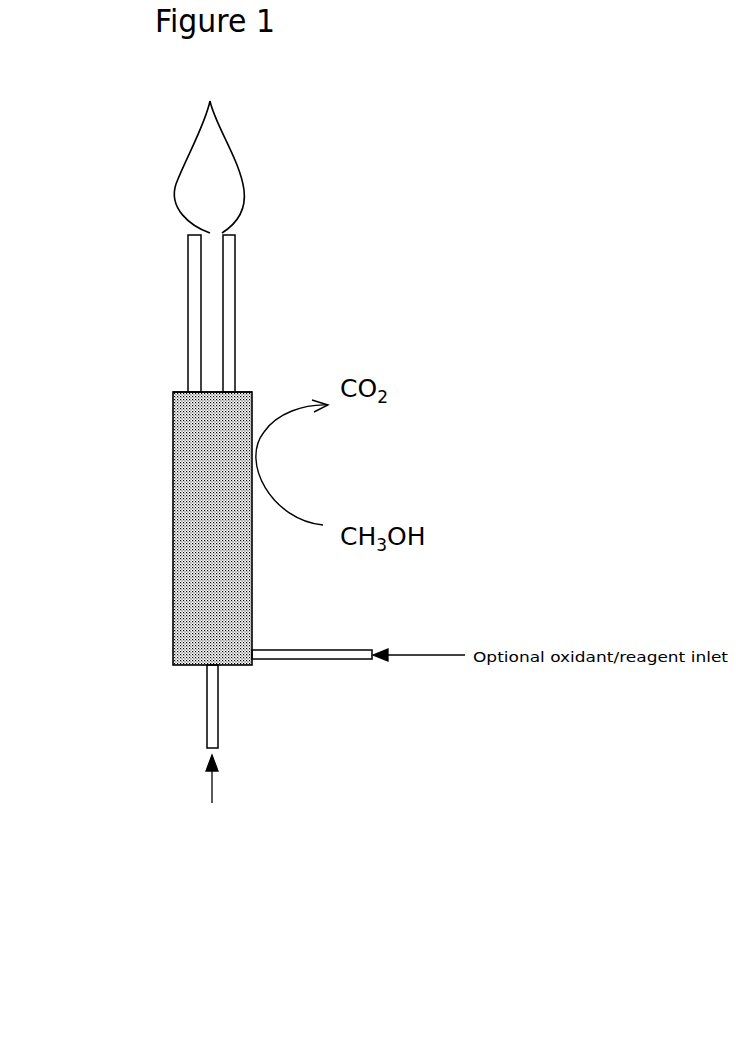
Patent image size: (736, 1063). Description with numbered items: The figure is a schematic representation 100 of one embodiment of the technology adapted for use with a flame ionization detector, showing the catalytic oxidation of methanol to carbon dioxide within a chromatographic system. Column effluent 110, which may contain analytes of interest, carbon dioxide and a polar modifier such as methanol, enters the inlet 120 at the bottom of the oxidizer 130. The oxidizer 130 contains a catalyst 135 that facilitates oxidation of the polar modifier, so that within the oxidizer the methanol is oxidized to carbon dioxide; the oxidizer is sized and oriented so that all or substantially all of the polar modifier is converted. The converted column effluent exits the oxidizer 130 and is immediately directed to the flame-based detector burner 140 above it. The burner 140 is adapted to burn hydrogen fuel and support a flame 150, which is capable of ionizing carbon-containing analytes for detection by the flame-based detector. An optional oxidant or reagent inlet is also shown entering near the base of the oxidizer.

The schematic representation 100 is at (518, 121).
The column effluent 110 is at (249, 779).
The inlet 120 is at (218, 708).
The oxidizer 130 is at (202, 515).
The catalyst 135 is at (202, 463).
The flame-based detector burner 140 is at (236, 313).
The flame 150 is at (198, 188).